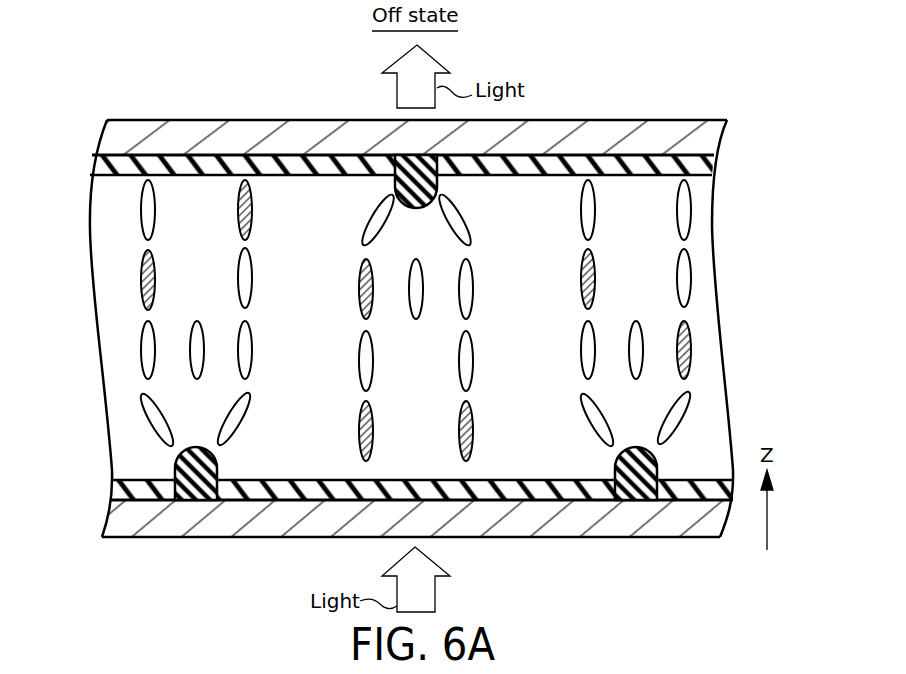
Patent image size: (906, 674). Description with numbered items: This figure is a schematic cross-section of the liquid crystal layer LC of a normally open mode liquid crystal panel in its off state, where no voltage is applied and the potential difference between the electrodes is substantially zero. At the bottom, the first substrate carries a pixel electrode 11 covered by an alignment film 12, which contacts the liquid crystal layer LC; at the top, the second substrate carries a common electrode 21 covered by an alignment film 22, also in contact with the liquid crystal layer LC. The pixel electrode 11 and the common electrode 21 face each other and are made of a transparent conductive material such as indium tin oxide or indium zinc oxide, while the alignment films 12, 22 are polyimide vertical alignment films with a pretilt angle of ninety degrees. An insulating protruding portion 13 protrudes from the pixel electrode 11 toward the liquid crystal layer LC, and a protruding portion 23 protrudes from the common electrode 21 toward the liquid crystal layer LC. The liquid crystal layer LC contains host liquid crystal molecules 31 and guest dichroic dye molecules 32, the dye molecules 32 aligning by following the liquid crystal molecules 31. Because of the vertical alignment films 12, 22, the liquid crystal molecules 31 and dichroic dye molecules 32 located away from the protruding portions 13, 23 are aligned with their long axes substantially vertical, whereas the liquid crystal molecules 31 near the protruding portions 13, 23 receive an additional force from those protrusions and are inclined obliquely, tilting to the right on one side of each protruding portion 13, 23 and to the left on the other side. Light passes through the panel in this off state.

The pixel electrode 11 is at (106, 525).
The alignment film 12 is at (107, 491).
The protruding portion 13 is at (184, 490).
The common electrode 21 is at (104, 133).
The alignment film 22 is at (96, 170).
The protruding portion 23 is at (403, 163).
The liquid crystal molecules 31 is at (143, 193).
The dichroic dye molecules 32 is at (154, 265).
The liquid crystal layer LC is at (713, 242).